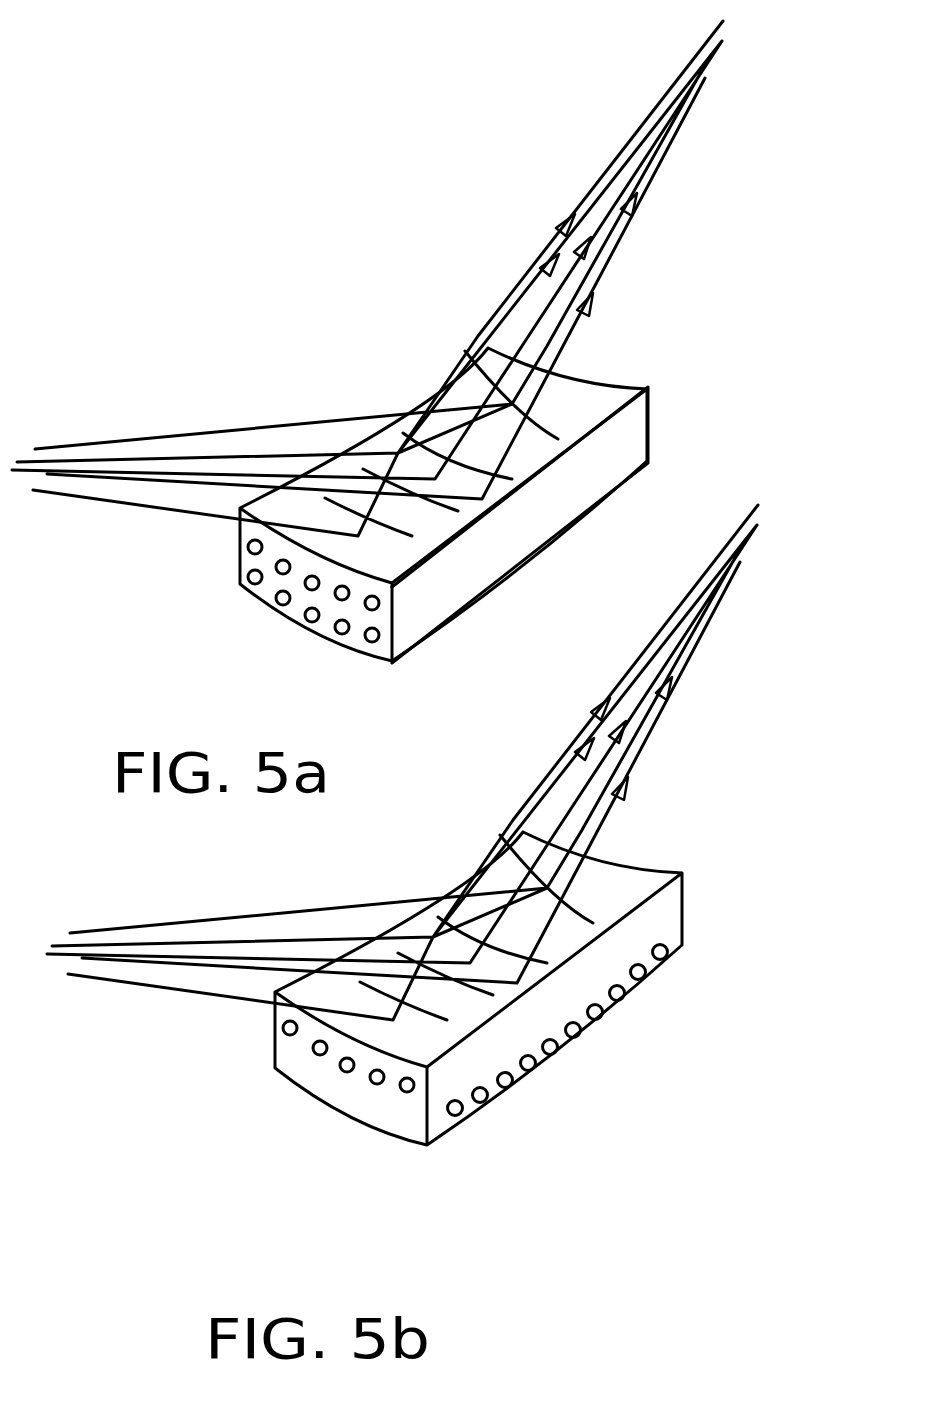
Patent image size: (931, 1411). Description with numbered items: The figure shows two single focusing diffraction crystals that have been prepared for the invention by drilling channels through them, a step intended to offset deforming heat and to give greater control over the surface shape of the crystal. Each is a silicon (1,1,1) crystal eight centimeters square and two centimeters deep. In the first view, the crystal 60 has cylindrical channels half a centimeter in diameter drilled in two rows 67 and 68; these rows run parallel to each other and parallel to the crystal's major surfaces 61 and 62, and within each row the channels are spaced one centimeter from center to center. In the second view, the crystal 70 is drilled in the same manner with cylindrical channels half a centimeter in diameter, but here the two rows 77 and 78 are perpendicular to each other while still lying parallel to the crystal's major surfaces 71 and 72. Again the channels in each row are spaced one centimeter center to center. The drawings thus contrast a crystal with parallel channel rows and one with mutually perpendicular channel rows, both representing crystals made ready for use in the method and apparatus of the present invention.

In FIG. 5a, the crystal 60 is at (443, 504).
In FIG. 5a, the major surface 61 is at (367, 278).
In FIG. 5a, the major surface 62 is at (632, 493).
In FIG. 5a, the row of channels 67 is at (247, 547).
In FIG. 5a, the row of channels 68 is at (248, 577).
In FIG. 5b, the crystal 70 is at (410, 1113).
In FIG. 5b, the major surface 71 is at (470, 880).
In FIG. 5b, the major surface 72 is at (642, 992).
In FIG. 5b, the row of channels 77 is at (668, 948).
In FIG. 5b, the row of channels 78 is at (283, 1028).